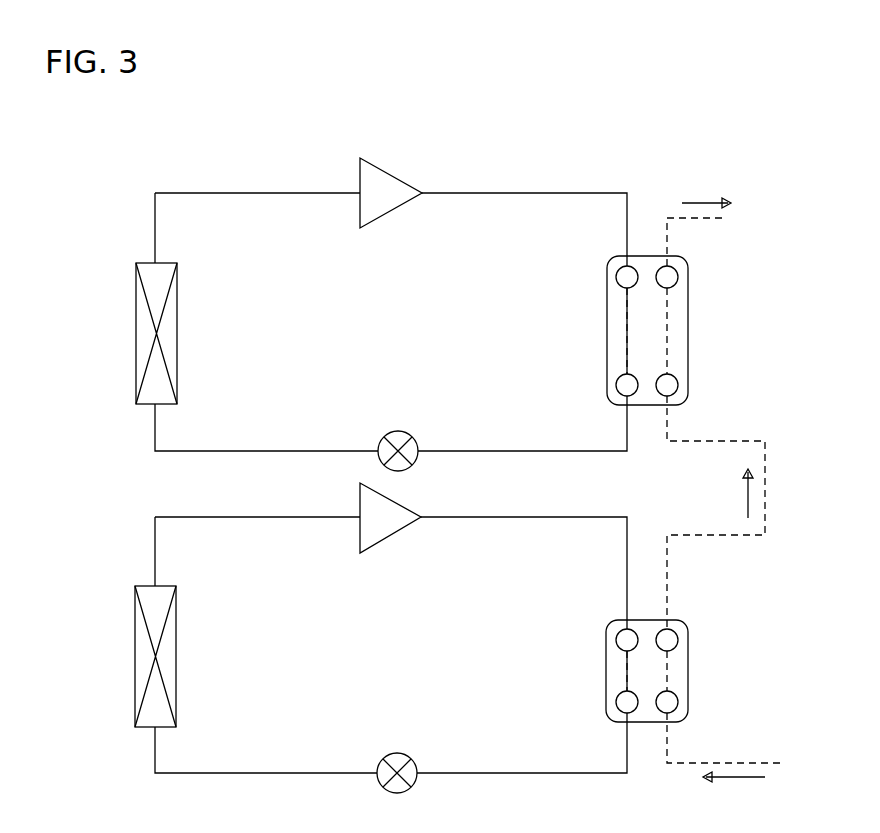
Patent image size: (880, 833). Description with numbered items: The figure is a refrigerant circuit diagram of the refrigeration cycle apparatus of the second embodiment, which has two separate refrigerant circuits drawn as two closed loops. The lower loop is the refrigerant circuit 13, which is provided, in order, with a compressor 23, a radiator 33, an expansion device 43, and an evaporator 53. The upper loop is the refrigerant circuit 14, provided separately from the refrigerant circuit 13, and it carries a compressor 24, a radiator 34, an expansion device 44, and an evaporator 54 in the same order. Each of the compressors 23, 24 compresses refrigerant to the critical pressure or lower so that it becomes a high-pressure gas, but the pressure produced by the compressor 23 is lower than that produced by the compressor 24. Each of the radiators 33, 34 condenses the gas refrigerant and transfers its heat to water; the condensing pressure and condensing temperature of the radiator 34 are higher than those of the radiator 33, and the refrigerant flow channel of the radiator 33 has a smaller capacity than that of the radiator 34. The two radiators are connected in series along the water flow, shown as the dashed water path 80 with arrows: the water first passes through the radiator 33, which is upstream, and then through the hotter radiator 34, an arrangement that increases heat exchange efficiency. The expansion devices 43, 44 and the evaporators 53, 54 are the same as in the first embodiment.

The refrigerant circuit 13 is at (495, 771).
The refrigerant circuit 14 is at (498, 191).
The compressor 23 is at (381, 541).
The compressor 24 is at (397, 172).
The radiator 33 is at (606, 662).
The radiator 34 is at (606, 337).
The expansion device 43 is at (398, 753).
The expansion device 44 is at (400, 430).
The evaporator 53 is at (177, 650).
The evaporator 54 is at (178, 325).
The heat medium circuit 80 is at (748, 762).